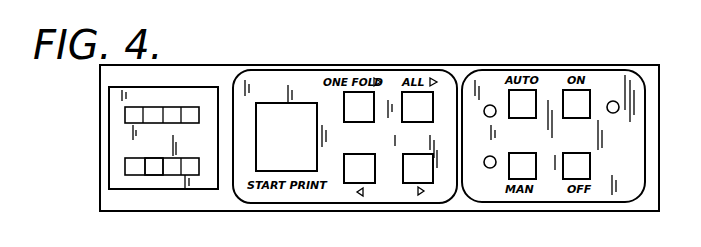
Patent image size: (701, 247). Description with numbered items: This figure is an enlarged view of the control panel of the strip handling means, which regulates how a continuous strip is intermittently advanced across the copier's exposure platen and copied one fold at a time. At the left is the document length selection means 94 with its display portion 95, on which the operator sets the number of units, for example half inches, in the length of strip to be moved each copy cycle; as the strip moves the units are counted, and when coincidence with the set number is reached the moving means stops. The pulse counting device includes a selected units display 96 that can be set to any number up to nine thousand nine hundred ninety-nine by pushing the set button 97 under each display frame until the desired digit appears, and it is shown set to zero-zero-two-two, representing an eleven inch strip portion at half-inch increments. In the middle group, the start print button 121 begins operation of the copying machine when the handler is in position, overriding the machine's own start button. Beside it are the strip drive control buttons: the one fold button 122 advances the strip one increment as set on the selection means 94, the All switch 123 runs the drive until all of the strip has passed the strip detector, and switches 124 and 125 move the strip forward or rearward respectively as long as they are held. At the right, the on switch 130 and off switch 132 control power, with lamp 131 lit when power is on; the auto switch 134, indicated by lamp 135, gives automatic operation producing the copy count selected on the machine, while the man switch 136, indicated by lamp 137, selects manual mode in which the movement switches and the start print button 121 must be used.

The document length selection means 94 is at (104, 116).
The display portion 95 is at (109, 166).
The selected units display 96 is at (150, 107).
The set button 97 is at (156, 176).
The start print button 121 is at (264, 102).
The one fold button 122 is at (345, 97).
The All switch 123 is at (403, 98).
The forward drive switch 124 is at (423, 178).
The rearward drive switch 125 is at (354, 178).
The on switch 130 is at (587, 93).
The lamp 131 is at (618, 103).
The off switch 132 is at (585, 172).
The auto switch 134 is at (530, 97).
The lamp 135 is at (490, 105).
The man switch 136 is at (533, 173).
The lamp 137 is at (490, 168).